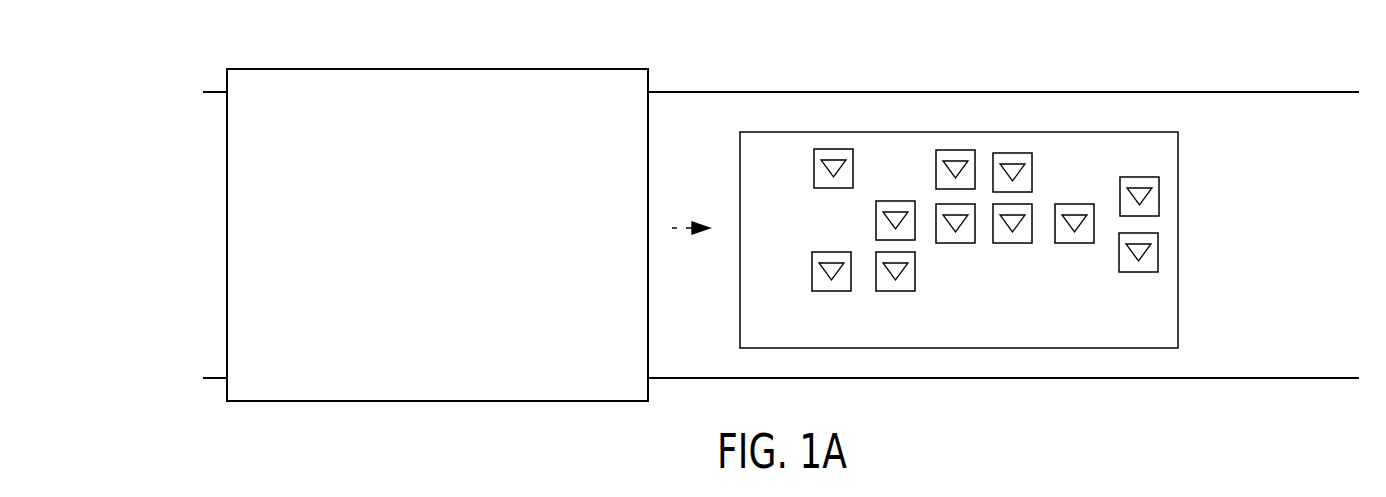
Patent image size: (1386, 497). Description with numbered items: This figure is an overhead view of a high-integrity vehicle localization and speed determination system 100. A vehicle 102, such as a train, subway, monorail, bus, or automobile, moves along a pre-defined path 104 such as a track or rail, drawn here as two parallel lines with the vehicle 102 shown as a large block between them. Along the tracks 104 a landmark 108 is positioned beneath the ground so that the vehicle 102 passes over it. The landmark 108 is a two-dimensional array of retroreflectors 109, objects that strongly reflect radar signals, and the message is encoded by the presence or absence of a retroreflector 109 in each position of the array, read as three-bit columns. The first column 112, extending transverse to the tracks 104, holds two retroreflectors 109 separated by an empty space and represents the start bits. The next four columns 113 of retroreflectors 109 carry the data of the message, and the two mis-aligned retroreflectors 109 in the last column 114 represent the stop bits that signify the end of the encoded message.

The high-integrity vehicle localization and speed determination system 100 is at (177, 139).
The vehicle 102 is at (422, 250).
The pre-defined path 104 is at (1218, 93).
The landmark 108 is at (797, 240).
The retroreflectors 109 is at (1120, 190).
The first column 112 is at (851, 300).
The next four columns 113 is at (1092, 293).
The last column 114 is at (1158, 300).